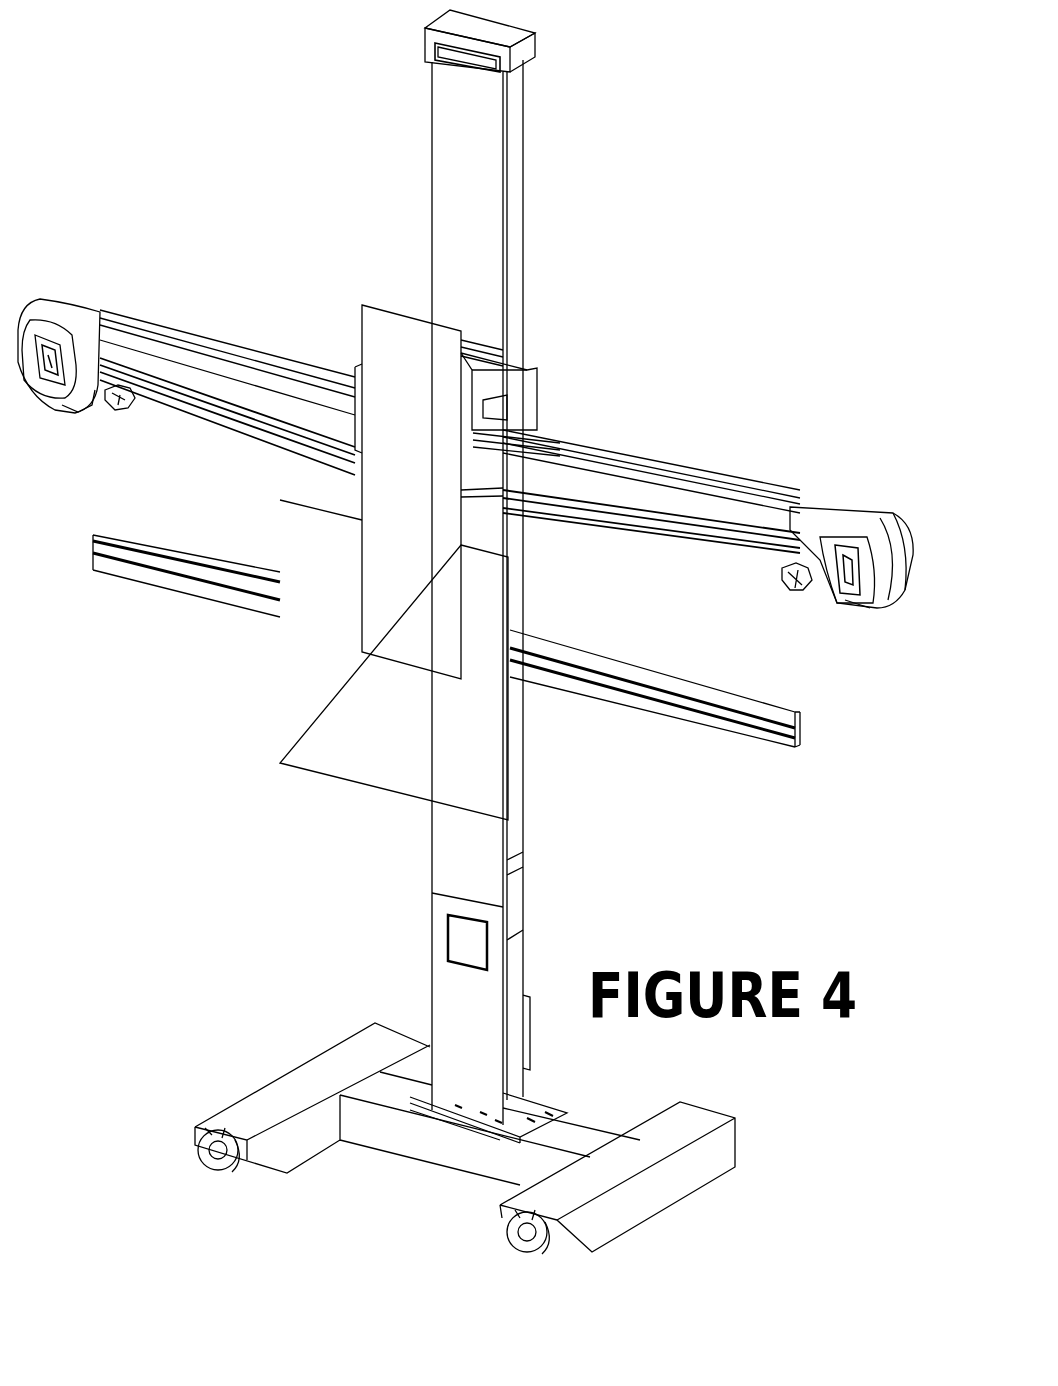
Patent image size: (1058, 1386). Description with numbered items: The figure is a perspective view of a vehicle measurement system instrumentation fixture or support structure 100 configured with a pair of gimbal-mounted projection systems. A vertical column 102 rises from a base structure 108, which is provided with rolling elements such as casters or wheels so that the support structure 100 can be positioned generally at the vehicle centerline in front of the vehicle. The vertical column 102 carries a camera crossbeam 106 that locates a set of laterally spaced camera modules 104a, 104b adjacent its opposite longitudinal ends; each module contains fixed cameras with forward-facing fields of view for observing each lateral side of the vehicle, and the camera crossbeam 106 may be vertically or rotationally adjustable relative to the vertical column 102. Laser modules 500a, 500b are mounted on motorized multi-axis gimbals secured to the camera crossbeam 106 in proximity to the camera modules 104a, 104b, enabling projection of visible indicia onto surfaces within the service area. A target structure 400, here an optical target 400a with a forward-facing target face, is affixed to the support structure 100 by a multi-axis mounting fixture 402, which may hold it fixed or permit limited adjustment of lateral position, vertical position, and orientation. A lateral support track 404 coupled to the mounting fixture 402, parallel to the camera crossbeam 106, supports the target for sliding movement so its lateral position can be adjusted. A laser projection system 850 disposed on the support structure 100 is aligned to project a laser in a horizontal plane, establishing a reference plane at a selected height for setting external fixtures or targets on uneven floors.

The support structure 100 is at (477, 632).
The vertical column 102 is at (458, 207).
The camera module 104a is at (849, 574).
The camera module 104b is at (186, 394).
The camera crossbeam 106 is at (698, 538).
The base structure 108 is at (406, 1138).
The target structure 400 is at (402, 561).
The optical target 400a is at (321, 688).
The multi-axis mounting fixture 402 is at (496, 404).
The lateral support track 404 is at (599, 729).
The laser module 500a is at (786, 587).
The laser module 500b is at (123, 432).
The laser projection system 850 is at (466, 932).